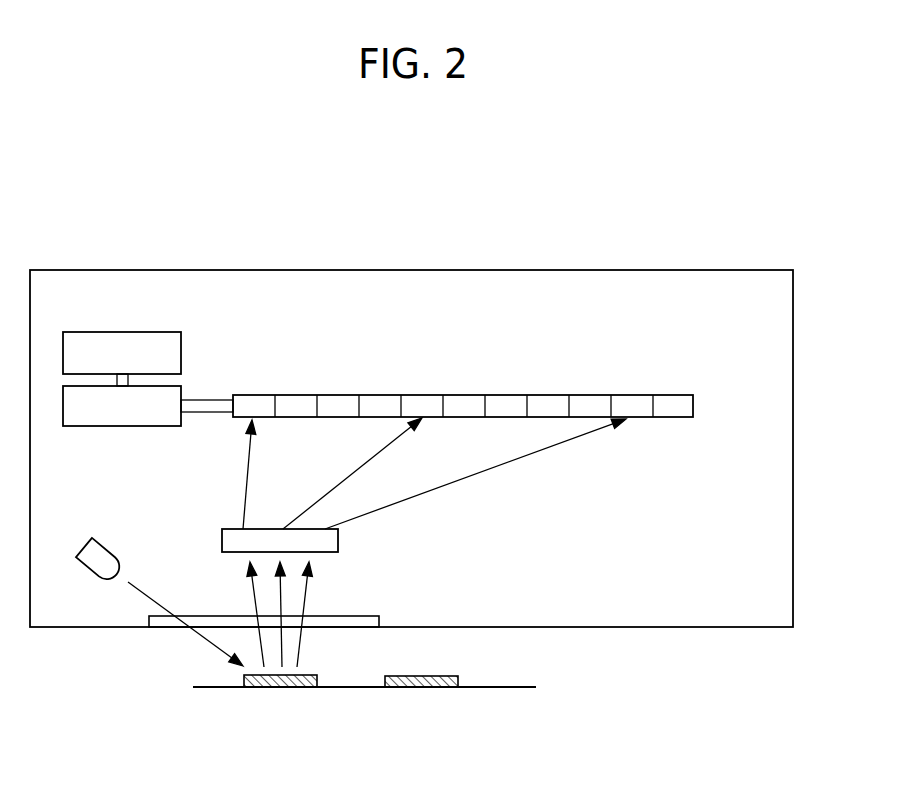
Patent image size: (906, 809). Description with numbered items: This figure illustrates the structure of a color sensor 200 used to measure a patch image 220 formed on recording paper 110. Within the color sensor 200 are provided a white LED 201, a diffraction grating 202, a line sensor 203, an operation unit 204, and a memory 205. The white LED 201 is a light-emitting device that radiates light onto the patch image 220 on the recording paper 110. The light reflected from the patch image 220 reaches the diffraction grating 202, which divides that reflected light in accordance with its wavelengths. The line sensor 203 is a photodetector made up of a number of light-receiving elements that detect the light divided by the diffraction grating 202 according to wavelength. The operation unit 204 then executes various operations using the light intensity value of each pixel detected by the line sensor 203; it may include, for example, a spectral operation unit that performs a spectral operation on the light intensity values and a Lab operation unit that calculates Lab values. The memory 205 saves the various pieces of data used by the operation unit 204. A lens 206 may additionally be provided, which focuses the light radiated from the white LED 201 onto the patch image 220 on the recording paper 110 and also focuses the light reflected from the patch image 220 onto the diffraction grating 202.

The color sensor 200 is at (546, 270).
The white LED 201 is at (110, 546).
The diffraction grating 202 is at (340, 540).
The line sensor 203 is at (256, 395).
The operation unit 204 is at (107, 427).
The memory 205 is at (141, 332).
The lens 206 is at (380, 618).
The patch image 220 is at (244, 680).
The recording paper 110 is at (515, 689).